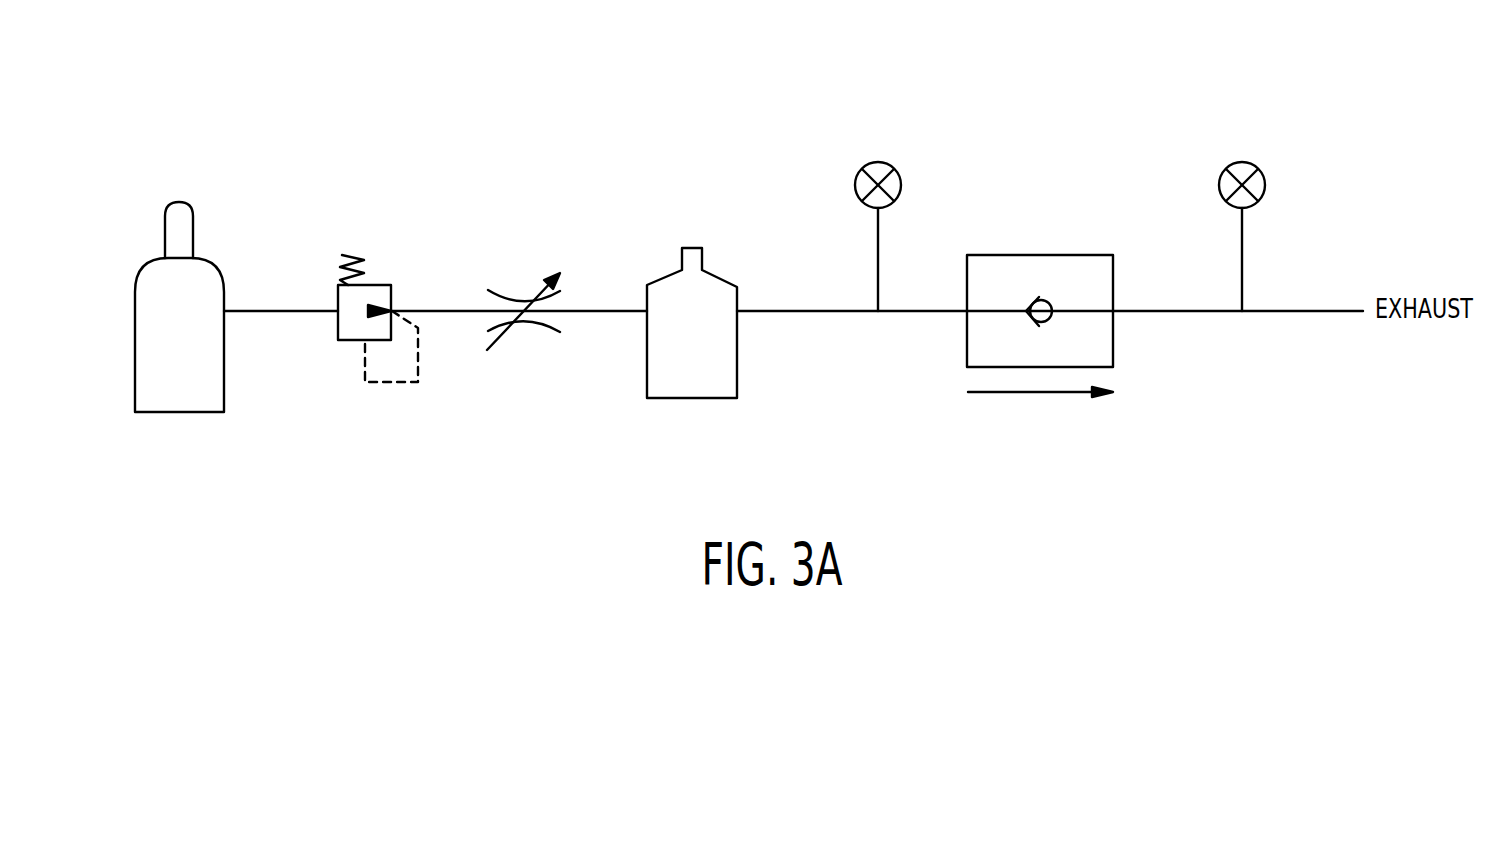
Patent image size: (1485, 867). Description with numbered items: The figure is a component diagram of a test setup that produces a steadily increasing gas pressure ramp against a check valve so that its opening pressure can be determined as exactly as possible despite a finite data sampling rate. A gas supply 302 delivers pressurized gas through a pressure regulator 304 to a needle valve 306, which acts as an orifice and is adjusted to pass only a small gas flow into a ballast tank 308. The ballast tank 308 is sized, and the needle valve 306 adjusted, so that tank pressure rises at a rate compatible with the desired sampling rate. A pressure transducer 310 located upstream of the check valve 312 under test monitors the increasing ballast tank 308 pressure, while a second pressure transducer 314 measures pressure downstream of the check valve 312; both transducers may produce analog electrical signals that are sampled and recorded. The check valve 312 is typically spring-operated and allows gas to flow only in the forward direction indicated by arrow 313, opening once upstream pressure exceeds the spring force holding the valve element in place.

The gas supply 302 is at (206, 259).
The pressure regulator 304 is at (382, 285).
The needle valve 306 is at (522, 323).
The ballast tank 308 is at (673, 272).
The pressure transducer 310 is at (856, 178).
The check valve 312 is at (1028, 255).
The arrow 313 is at (1060, 392).
The pressure transducer 314 is at (1221, 174).